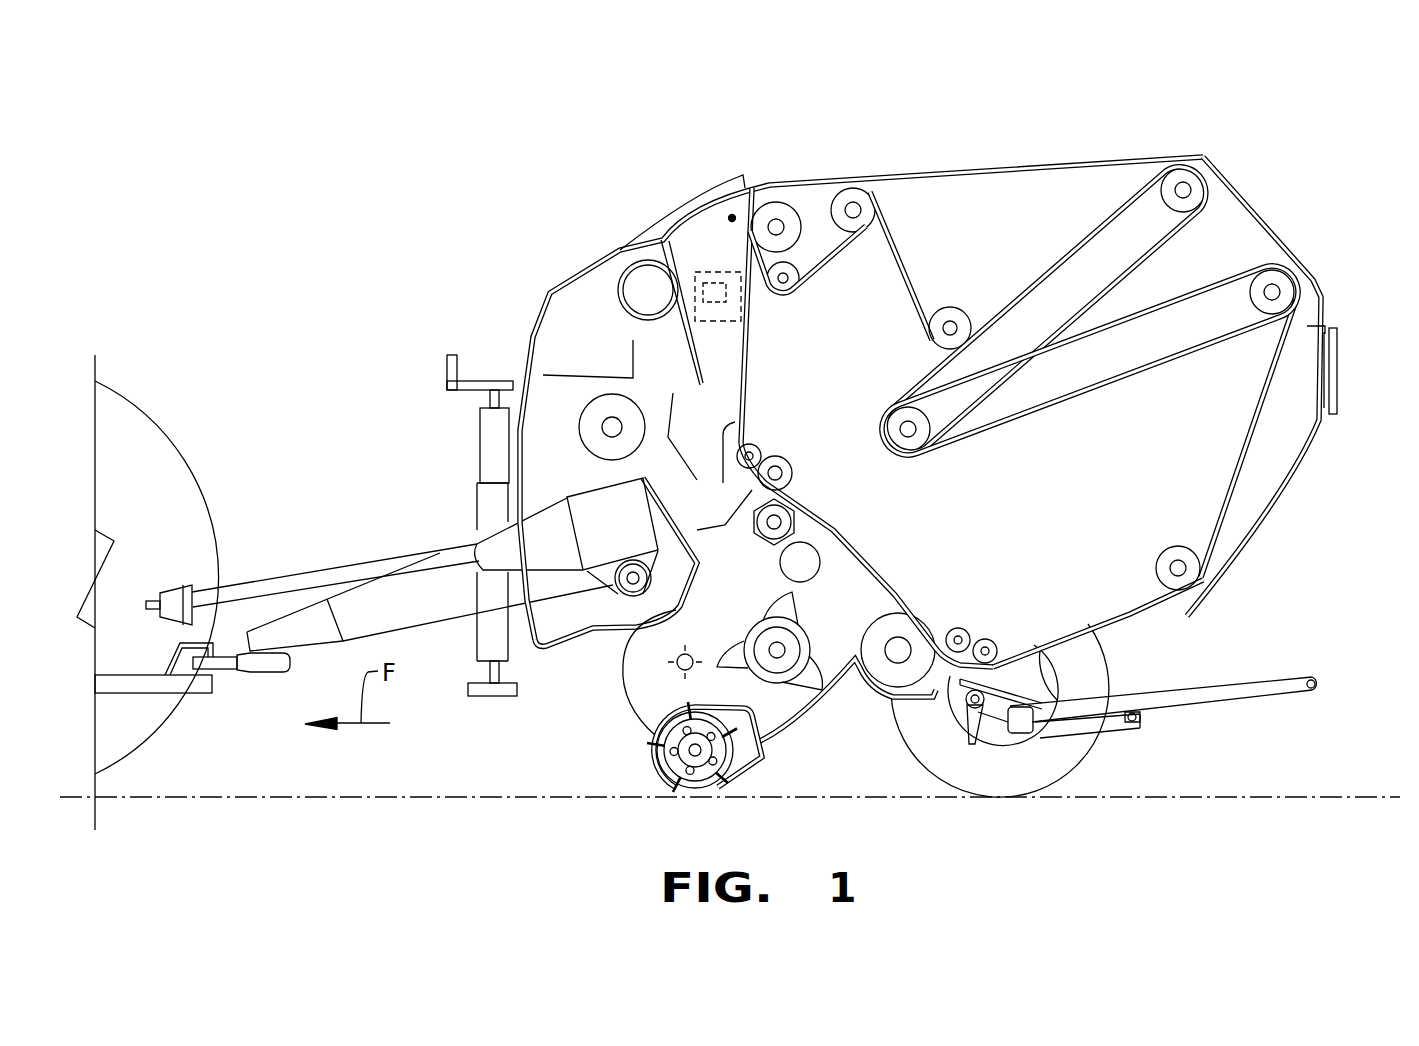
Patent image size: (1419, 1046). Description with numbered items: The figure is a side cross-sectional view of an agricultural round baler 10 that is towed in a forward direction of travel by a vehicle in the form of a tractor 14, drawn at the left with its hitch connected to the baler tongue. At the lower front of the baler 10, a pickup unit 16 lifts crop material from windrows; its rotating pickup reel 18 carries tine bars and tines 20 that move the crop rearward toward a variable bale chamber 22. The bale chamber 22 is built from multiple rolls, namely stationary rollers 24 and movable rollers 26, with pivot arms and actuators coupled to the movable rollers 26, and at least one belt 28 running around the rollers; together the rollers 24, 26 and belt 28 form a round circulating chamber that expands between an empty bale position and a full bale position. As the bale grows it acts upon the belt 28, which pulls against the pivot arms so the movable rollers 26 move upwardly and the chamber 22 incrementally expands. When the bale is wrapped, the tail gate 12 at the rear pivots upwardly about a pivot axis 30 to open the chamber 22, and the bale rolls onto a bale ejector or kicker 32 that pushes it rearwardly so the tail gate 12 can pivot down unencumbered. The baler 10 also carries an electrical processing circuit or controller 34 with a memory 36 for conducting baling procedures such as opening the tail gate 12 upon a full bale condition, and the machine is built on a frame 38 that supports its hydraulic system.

The round baler 10 is at (553, 218).
The tail gate 12 is at (1355, 375).
The tractor 14 is at (172, 437).
The pickup unit 16 is at (650, 798).
The pickup reel 18 is at (747, 770).
The tines 20 is at (655, 747).
The variable bale chamber 22 is at (1029, 515).
The stationary rollers 24 is at (776, 203).
The movable rollers 26 is at (893, 405).
The belt 28 is at (833, 533).
The pivot axis 30 is at (732, 214).
The bale ejector or kicker 32 is at (1233, 697).
The controller 34 is at (727, 323).
The memory 36 is at (727, 297).
The frame 38 is at (668, 207).